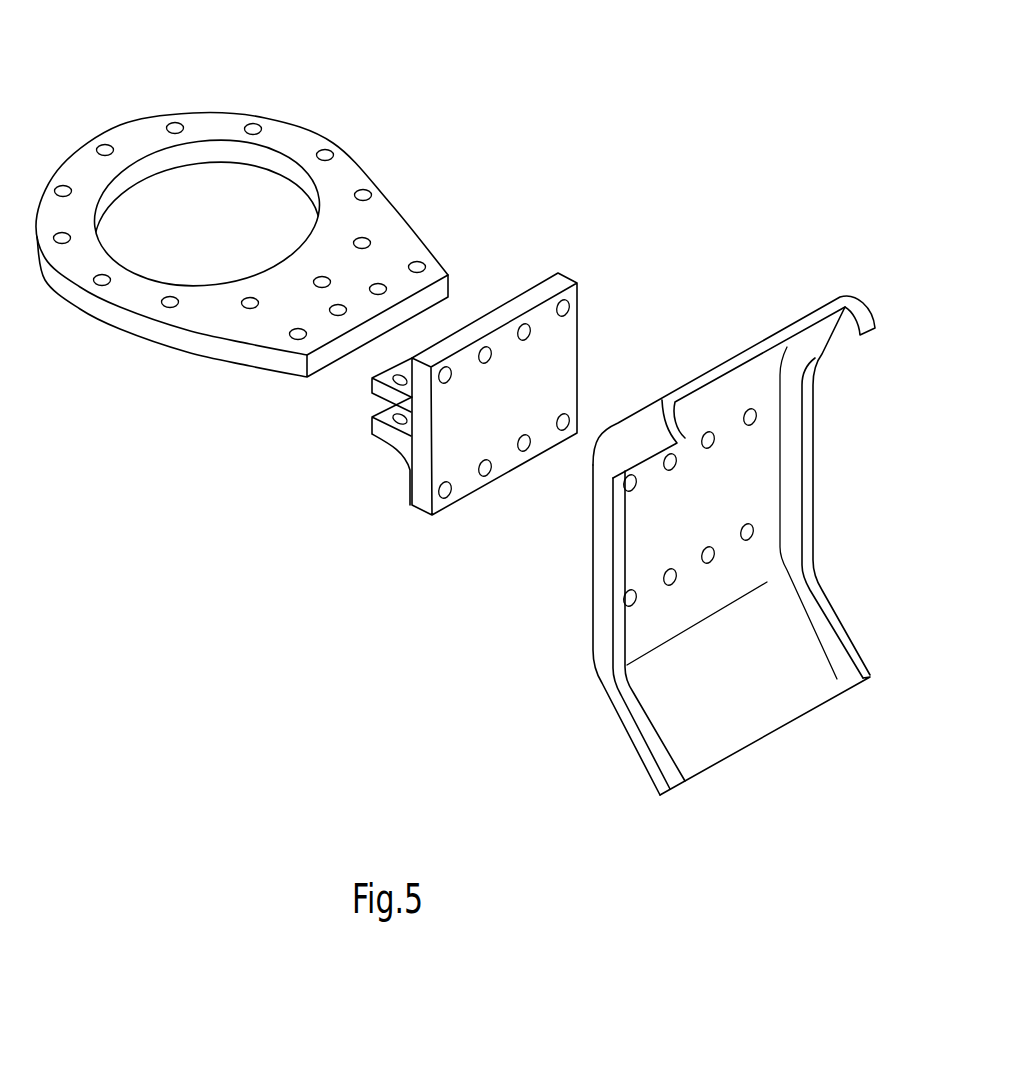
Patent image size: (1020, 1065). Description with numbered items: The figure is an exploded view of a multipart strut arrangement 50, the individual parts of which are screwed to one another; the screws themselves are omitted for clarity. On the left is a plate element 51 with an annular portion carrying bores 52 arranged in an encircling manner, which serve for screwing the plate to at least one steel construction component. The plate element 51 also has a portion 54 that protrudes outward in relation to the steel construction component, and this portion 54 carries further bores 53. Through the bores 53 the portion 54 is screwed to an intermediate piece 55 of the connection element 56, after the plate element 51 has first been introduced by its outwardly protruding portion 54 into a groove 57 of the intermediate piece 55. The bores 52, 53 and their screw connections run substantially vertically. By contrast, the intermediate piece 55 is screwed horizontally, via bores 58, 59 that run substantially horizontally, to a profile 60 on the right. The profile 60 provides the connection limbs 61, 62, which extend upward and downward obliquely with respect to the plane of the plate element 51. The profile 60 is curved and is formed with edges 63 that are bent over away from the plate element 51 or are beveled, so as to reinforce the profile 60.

The strut arrangement 50 is at (600, 117).
The plate element 51 is at (118, 312).
The bores 52 is at (240, 122).
The bores 53 is at (341, 306).
The portion 54 is at (268, 355).
The intermediate piece 55 is at (557, 352).
The connection element 56 is at (373, 542).
The groove 57 is at (378, 405).
The bores 58 is at (486, 363).
The bores 59 is at (715, 438).
The profile 60 is at (568, 750).
The connection limb 61 is at (760, 700).
The connection limb 62 is at (760, 345).
The edges 63 is at (792, 515).